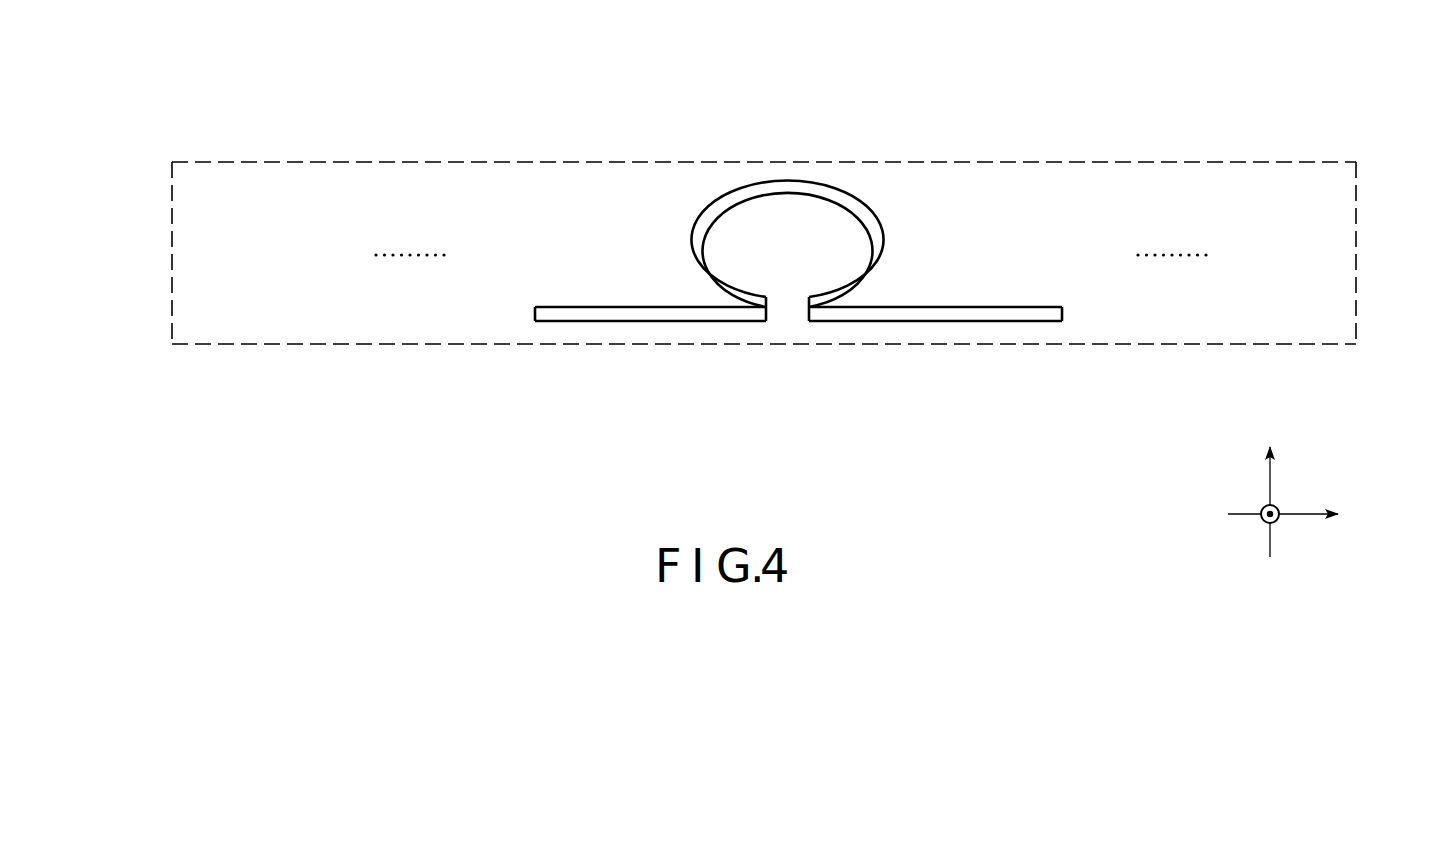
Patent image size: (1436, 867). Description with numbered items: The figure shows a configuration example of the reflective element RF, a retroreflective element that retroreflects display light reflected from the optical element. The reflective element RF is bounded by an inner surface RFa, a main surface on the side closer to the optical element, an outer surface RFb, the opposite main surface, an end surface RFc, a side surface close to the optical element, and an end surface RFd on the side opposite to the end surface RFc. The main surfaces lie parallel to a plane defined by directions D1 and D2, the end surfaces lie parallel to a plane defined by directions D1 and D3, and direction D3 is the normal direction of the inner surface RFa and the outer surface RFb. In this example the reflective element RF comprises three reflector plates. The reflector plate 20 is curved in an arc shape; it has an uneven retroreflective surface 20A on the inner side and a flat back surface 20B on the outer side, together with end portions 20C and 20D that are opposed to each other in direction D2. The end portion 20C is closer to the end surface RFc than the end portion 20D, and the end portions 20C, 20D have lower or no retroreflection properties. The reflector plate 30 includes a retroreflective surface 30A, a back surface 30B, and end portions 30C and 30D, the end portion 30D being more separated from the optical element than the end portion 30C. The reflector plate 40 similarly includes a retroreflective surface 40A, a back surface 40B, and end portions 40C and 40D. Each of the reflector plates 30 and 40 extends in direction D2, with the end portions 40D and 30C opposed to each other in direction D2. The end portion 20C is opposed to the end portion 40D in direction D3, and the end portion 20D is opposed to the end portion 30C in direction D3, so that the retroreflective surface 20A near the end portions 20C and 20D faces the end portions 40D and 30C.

The reflective element RF is at (749, 238).
The inner surface RFa is at (248, 160).
The outer surface RFb is at (256, 347).
The end surface RFc is at (1360, 228).
The end surface RFd is at (172, 235).
The reflector plate 20 is at (795, 197).
The retroreflective surface 20A is at (807, 180).
The back surface 20B is at (823, 205).
The end portion 20C is at (807, 299).
The end portion 20D is at (768, 299).
The reflector plate 30 is at (640, 332).
The retroreflective surface 30A is at (590, 305).
The lower surface of first strip portion 30B is at (617, 323).
The end portion 30C is at (768, 313).
The end portion 30D is at (535, 313).
The reflector plate 40 is at (951, 332).
The retroreflective surface 40A is at (962, 305).
The back surface 40B is at (1000, 323).
The end portion 40C is at (1063, 313).
The end portion 40D is at (807, 313).
The direction D1 is at (1253, 522).
The direction D2 is at (1326, 515).
The direction D3 is at (1271, 462).